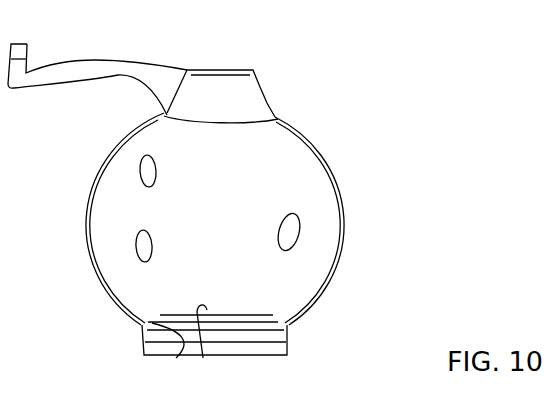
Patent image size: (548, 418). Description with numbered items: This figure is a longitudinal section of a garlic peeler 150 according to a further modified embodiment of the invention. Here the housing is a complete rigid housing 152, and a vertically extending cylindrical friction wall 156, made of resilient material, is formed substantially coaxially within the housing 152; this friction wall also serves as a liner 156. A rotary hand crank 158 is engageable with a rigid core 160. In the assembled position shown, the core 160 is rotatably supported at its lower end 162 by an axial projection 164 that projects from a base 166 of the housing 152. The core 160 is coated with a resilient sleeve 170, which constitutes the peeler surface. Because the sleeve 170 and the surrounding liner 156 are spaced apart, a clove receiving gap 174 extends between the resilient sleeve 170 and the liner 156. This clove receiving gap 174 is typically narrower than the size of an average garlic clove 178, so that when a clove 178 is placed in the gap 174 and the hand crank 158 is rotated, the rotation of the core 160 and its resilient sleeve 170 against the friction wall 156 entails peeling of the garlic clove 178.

The garlic peeler 150 is at (374, 161).
The rigid housing 152 is at (326, 292).
The cylindrical friction wall 156 is at (140, 279).
The rotary hand crank 158 is at (113, 66).
The rigid core 160 is at (268, 212).
The lower end 162 is at (183, 345).
The axial projection 164 is at (207, 312).
The base 166 is at (251, 347).
The resilient sleeve 170 is at (273, 142).
The clove receiving gap 174 is at (117, 218).
The garlic clove 178 is at (297, 232).